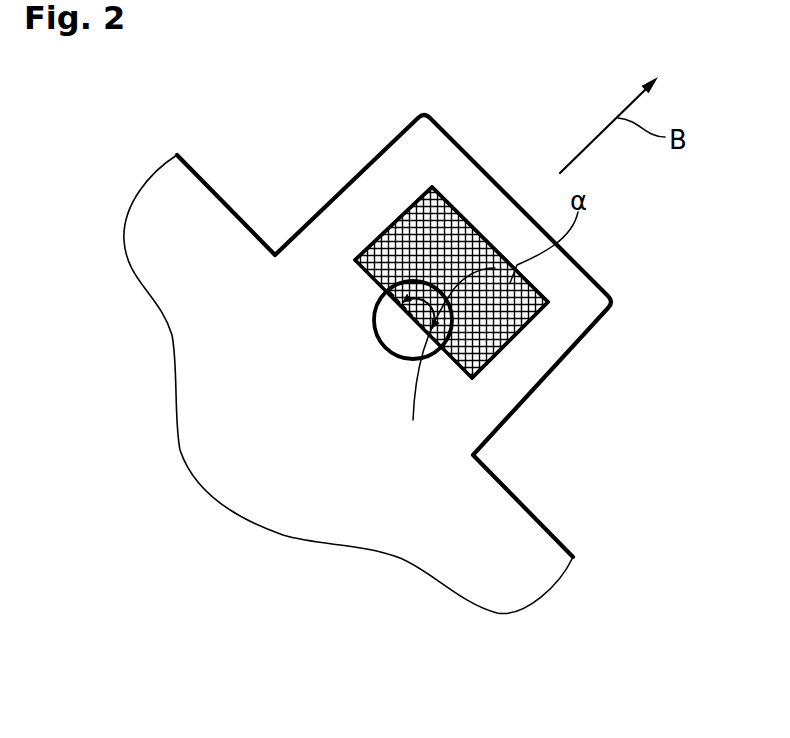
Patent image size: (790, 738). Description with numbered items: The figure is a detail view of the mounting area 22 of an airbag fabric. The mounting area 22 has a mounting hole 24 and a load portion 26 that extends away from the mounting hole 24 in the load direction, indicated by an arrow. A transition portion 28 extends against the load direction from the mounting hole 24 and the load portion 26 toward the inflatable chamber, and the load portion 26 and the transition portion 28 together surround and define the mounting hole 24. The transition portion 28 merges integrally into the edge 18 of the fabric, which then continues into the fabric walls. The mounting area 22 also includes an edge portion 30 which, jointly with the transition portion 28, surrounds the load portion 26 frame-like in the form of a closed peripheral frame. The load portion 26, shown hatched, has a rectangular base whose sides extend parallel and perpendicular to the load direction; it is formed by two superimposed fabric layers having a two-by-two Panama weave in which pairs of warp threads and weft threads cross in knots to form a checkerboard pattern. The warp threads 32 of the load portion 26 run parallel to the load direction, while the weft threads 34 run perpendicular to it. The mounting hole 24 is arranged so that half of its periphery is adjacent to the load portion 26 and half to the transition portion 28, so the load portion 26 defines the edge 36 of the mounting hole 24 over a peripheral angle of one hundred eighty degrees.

The edge 18 is at (167, 227).
The mounting area 22 is at (334, 132).
The mounting hole 24 is at (402, 322).
The load portion 26 is at (520, 273).
The transition portion 28 is at (370, 362).
The edge portion 30 is at (400, 185).
The warp threads 32 is at (463, 215).
The weft threads 34 is at (513, 345).
The edge of the mounting hole 36 is at (413, 420).